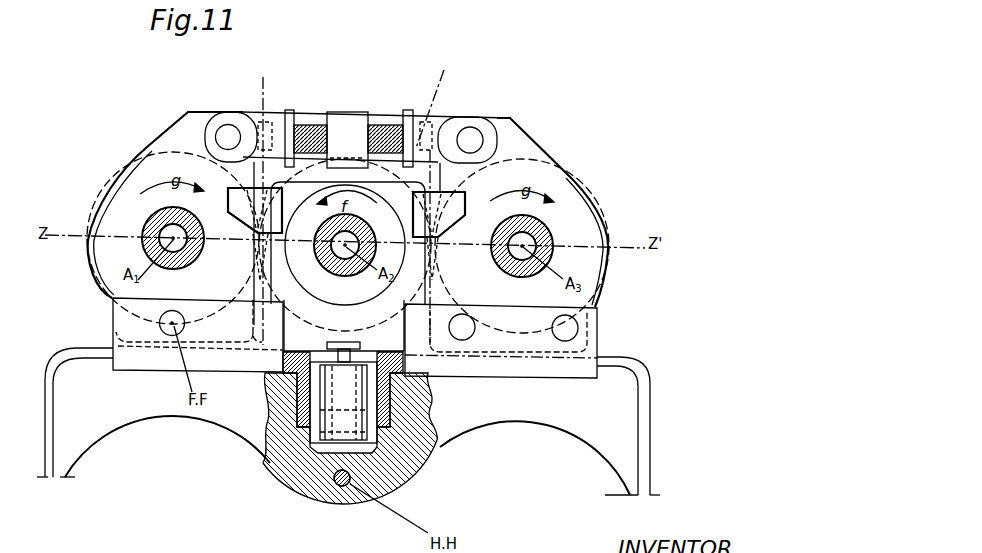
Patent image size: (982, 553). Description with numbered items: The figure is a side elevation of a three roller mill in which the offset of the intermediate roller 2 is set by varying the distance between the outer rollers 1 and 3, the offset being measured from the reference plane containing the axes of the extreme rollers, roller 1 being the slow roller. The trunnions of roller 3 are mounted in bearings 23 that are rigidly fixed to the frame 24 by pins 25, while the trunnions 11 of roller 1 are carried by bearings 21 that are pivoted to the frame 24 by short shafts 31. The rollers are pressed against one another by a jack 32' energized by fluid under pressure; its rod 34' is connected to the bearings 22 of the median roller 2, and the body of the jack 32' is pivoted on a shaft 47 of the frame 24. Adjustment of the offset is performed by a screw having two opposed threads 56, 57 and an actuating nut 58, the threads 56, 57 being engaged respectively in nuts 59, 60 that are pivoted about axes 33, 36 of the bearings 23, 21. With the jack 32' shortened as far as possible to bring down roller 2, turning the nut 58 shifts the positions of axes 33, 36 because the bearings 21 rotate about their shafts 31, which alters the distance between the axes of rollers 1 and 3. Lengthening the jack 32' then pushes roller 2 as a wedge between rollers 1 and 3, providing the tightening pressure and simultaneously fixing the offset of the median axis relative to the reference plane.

The roller 1 is at (115, 167).
The intermediate roller 2 is at (377, 181).
The roller 3 is at (590, 188).
The trunnions 11 is at (173, 228).
The bearings 21 is at (185, 133).
The bearings 22 is at (423, 298).
The bearings 23 is at (523, 148).
The frame 24 is at (617, 433).
The pins 25 is at (573, 328).
The short shafts 31 is at (170, 323).
The jack 32' is at (387, 428).
The axis 33 is at (473, 138).
The rod 34' is at (391, 360).
The axis 36 is at (230, 138).
The shaft 47 is at (336, 478).
The thread 56 is at (390, 126).
The thread 57 is at (312, 126).
The actuating nut 58 is at (337, 132).
The nut 59 is at (441, 205).
The nut 60 is at (270, 120).